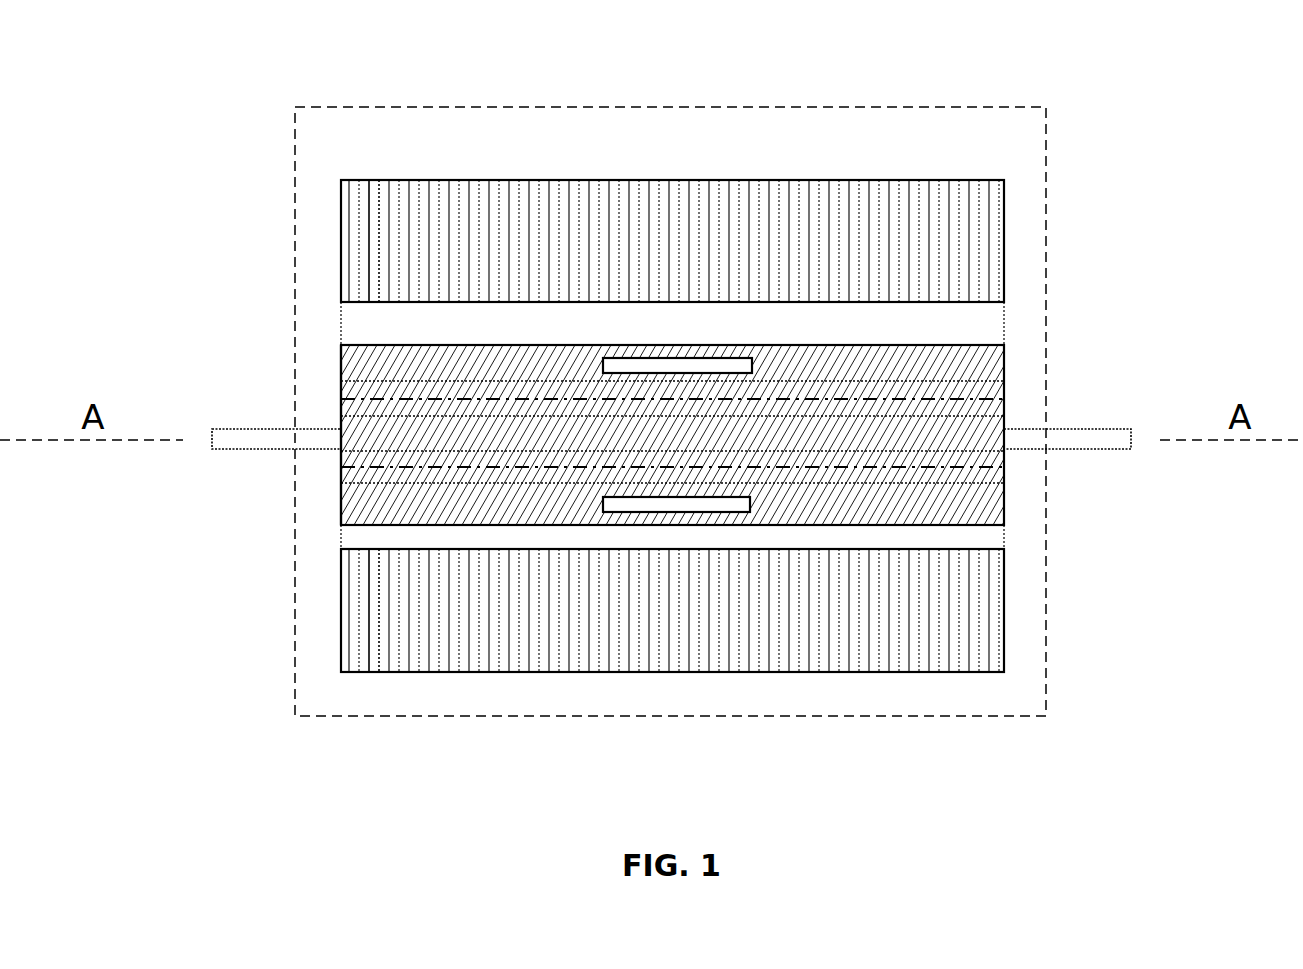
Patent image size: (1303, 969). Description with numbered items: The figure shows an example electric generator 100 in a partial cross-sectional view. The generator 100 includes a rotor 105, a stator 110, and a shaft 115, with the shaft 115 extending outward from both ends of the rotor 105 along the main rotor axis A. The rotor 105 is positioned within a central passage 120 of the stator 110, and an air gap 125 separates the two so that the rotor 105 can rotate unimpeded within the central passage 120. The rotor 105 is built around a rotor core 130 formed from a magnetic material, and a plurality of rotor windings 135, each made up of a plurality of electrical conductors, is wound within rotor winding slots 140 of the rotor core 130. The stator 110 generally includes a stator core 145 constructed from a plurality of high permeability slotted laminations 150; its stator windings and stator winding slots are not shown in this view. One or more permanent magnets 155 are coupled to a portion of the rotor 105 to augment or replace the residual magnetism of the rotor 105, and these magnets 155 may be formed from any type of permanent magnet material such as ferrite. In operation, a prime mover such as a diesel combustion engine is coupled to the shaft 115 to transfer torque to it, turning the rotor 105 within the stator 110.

The generator 100 is at (548, 107).
The rotor 105 is at (353, 345).
The stator 110 is at (607, 180).
The shaft 115 is at (238, 440).
The central passage 120 is at (226, 375).
The air gap 125 is at (990, 313).
The rotor core 130 is at (353, 497).
The rotor windings 135 is at (990, 393).
The rotor winding slots 140 is at (976, 383).
The stator core 145 is at (371, 188).
The slotted laminations 150 is at (512, 193).
The permanent magnets 155 is at (713, 358).